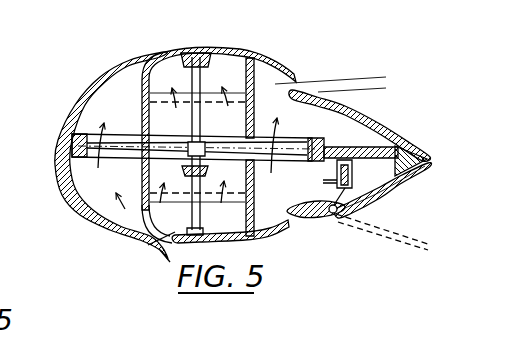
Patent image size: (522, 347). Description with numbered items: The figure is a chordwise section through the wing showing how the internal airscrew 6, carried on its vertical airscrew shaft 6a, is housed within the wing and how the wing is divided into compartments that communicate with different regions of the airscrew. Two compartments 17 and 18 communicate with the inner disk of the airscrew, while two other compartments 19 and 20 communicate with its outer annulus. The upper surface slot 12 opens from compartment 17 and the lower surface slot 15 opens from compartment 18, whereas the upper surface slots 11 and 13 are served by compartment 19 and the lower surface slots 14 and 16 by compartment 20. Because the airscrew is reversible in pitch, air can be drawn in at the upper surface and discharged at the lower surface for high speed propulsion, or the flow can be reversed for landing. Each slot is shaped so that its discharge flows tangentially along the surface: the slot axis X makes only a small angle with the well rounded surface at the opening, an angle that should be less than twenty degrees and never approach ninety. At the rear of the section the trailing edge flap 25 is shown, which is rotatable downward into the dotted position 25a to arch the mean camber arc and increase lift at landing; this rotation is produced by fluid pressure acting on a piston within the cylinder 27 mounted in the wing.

The upper surface slot 11 is at (163, 54).
The upper surface slot 12 is at (180, 59).
The upper surface slot 13 is at (302, 81).
The lower surface slot 14 is at (150, 235).
The lower surface slot 15 is at (162, 257).
The lower surface slot 16 is at (307, 224).
The compartment 17 is at (221, 77).
The compartment 18 is at (252, 170).
The compartment 19 is at (100, 110).
The compartment 20 is at (72, 182).
The trailing edge flap 25 is at (380, 186).
The flap lowered position 25a is at (382, 249).
The cylinder 27 is at (398, 153).
The airscrew 6 is at (144, 204).
The airscrew shaft 6a is at (230, 225).
The slot axis X is at (404, 95).